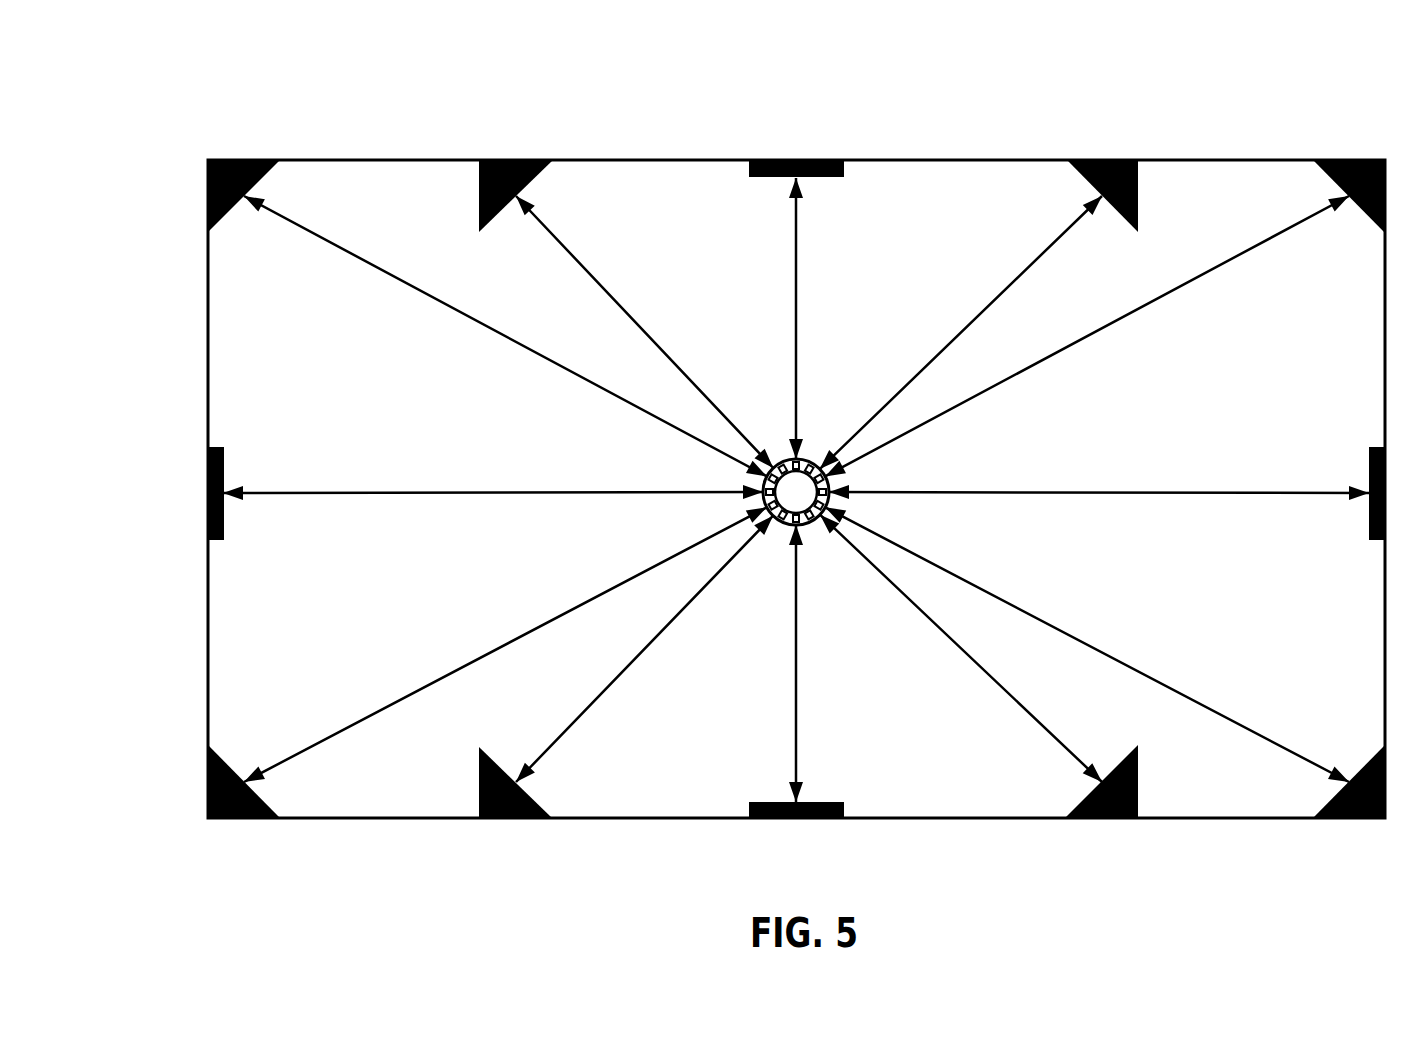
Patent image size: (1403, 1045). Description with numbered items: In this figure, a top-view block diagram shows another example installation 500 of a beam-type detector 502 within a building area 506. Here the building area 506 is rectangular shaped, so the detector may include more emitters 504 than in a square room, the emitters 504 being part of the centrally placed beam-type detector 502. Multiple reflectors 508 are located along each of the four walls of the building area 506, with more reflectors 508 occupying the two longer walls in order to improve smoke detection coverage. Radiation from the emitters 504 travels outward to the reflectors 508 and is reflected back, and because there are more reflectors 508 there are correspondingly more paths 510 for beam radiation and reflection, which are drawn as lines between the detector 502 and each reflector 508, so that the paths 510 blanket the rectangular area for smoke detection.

The installation 500 is at (228, 67).
The beam-type detector 502 is at (826, 478).
The emitters 504 is at (828, 504).
The building area 506 is at (1243, 160).
The reflectors 508 is at (270, 174).
The paths 510 is at (797, 270).